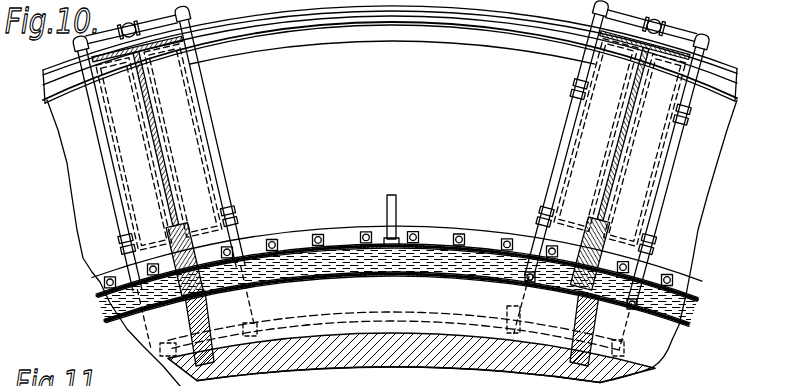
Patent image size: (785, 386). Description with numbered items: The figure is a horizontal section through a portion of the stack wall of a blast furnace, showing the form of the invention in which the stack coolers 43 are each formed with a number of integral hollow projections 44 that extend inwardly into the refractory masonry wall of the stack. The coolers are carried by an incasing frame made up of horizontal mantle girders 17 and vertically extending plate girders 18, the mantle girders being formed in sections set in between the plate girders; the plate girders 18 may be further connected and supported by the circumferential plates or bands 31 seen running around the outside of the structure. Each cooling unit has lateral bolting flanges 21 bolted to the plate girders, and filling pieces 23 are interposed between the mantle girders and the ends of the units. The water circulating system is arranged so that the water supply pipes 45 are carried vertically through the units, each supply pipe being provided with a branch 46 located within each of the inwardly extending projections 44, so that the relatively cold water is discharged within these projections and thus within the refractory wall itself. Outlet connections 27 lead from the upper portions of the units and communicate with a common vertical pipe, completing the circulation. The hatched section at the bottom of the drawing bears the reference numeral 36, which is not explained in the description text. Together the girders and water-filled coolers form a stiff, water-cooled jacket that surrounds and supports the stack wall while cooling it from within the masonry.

The mantle girder 17 is at (73, 174).
The plate girder 18 is at (596, 219).
The lateral bolting flange 21 is at (191, 252).
The filling piece 23 is at (598, 224).
The outlet connection 27 is at (115, 187).
The circumferential plate or band 31 is at (370, 13).
The bottom slab 36 is at (402, 346).
The stack cooler 43 is at (430, 257).
The hollow projection 44 is at (397, 299).
The water supply pipe 45 is at (516, 316).
The branch 46 is at (397, 315).